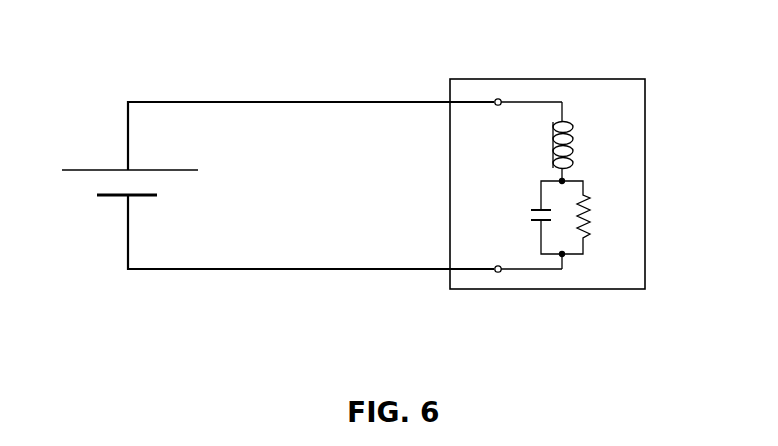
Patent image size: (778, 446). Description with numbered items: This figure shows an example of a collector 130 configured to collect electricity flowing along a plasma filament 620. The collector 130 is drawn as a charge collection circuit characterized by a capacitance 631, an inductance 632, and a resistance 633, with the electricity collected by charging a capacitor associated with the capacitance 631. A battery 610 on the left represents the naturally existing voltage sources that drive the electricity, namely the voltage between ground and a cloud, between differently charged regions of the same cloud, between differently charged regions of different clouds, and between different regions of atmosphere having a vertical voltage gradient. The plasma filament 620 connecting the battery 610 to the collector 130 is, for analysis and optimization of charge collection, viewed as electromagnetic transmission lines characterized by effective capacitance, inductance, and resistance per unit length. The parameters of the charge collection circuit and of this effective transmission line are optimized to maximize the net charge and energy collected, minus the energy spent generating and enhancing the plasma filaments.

The collector 130 is at (632, 107).
The battery 610 is at (80, 188).
The plasma filament 620 is at (305, 102).
The capacitance 631 is at (517, 218).
The inductance 632 is at (522, 132).
The resistance 633 is at (623, 218).